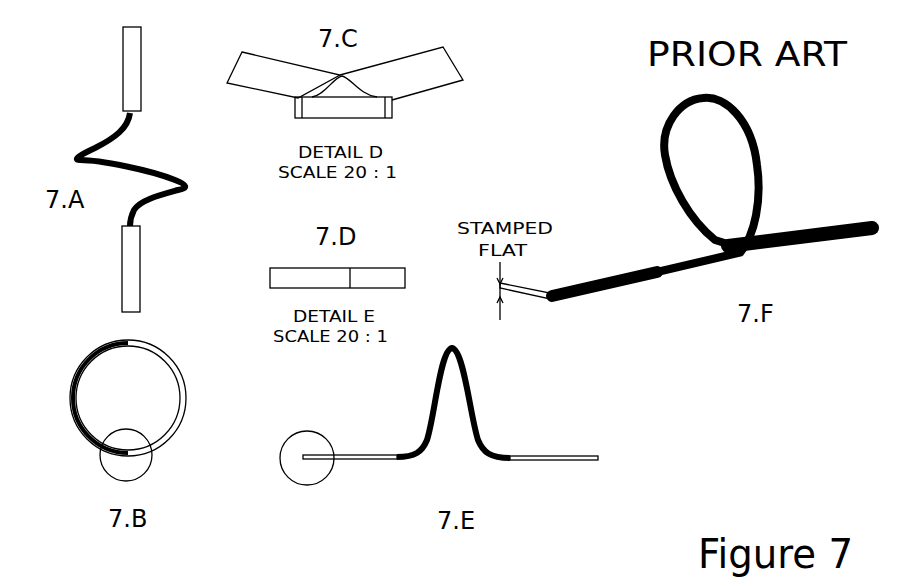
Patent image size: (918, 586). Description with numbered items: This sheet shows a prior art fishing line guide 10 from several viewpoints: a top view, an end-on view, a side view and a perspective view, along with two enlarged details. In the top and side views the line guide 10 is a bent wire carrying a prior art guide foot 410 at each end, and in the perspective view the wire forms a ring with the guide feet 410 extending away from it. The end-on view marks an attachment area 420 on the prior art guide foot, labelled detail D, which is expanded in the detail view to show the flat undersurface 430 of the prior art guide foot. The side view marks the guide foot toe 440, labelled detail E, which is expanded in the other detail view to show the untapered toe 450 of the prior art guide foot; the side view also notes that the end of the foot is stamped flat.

The line guide 10 is at (112, 135).
The prior art guide foot 410 is at (124, 62).
The attachment area D 420 is at (101, 462).
The flat undersurface of prior art guide foot 430 is at (357, 120).
The guide foot toe E 440 is at (307, 439).
The untapered toe of prior art guide foot 450 is at (347, 268).